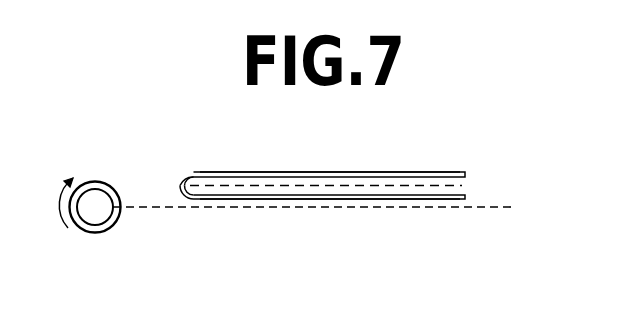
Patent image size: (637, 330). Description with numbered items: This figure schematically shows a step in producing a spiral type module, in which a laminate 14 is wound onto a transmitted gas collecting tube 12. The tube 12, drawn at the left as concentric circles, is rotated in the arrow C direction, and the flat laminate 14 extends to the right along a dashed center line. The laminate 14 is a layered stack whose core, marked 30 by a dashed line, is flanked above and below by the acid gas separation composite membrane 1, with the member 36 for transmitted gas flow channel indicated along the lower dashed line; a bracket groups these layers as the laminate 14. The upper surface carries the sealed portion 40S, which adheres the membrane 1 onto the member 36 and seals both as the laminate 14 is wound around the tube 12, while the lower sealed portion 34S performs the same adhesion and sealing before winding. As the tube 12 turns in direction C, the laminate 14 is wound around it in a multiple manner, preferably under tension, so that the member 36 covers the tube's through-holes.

The transmitted gas collecting tube 12 is at (92, 182).
The arrow C direction C is at (56, 203).
The member for transmitted gas flow channel 36 is at (500, 208).
The laminate 14 is at (379, 191).
The acid gas separation composite membrane 1 is at (467, 172).
The core layer 30 is at (466, 186).
The sealed portion 40S is at (413, 173).
The sealed portion 34S is at (412, 201).